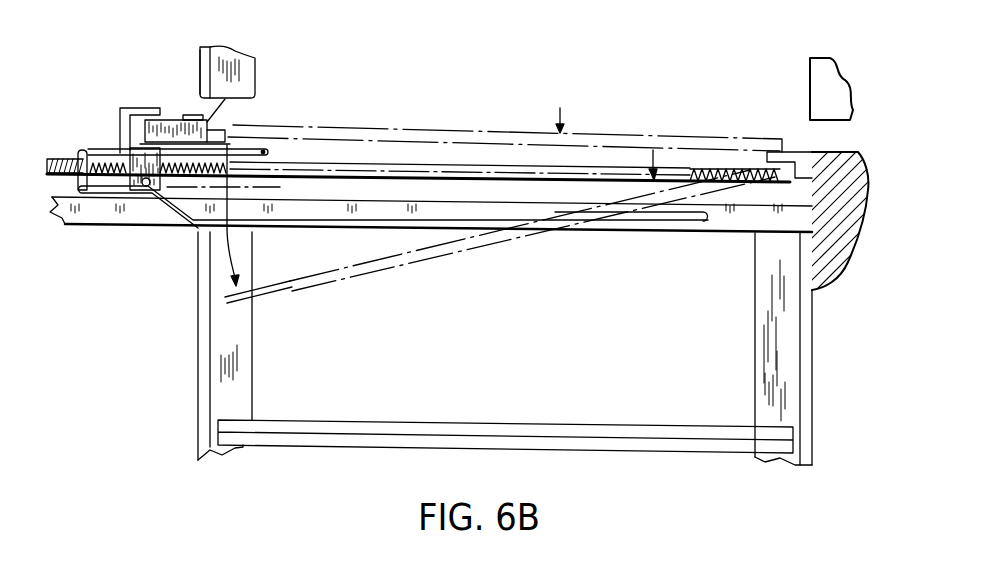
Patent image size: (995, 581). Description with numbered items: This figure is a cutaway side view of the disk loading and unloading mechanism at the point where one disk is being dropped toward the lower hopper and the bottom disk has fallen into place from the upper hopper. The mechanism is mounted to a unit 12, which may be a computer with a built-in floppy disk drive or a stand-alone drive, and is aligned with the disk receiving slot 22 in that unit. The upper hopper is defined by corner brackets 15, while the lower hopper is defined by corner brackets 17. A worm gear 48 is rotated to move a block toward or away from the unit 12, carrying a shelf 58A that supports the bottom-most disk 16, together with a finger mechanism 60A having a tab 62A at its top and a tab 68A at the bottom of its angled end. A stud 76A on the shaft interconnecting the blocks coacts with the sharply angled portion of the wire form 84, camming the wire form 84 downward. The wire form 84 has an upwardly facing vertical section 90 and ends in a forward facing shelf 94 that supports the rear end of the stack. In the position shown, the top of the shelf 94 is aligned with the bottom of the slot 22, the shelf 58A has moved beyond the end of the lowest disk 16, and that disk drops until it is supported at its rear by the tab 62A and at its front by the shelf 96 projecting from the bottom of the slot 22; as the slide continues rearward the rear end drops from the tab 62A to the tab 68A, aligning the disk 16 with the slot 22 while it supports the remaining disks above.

The unit 12 is at (812, 103).
The corner bracket 15 is at (205, 62).
The disk 16 is at (397, 130).
The corner bracket 17 is at (202, 305).
The disk receiving slot 22 is at (859, 150).
The worm gear 48 is at (467, 167).
The shelf 58A is at (137, 107).
The finger mechanism 60A is at (172, 120).
The tab or shelf 62A is at (225, 99).
The tab or shelf 68A is at (222, 130).
The stud 76A is at (146, 188).
The wire form 84 is at (297, 222).
The vertical section 90 is at (82, 150).
The shelf 94 is at (270, 151).
The shelf 96 is at (790, 152).